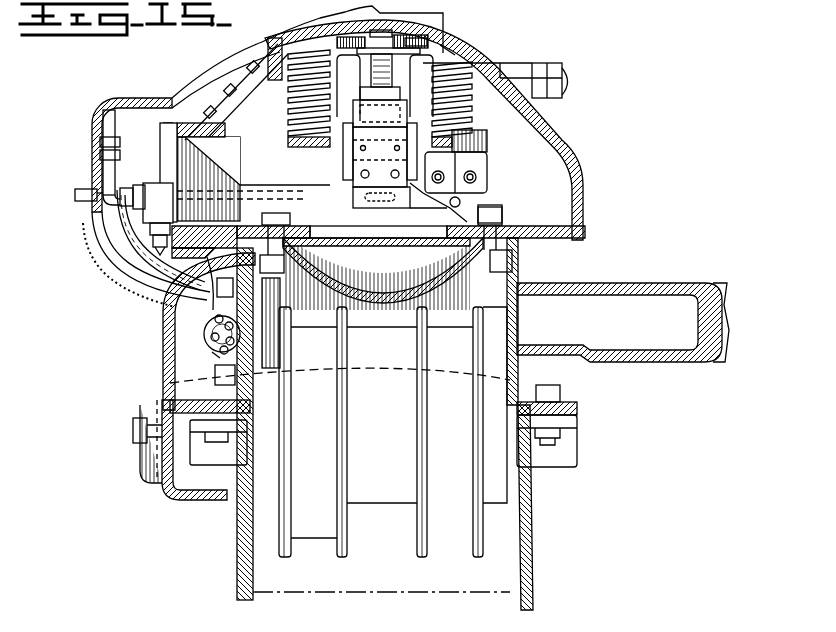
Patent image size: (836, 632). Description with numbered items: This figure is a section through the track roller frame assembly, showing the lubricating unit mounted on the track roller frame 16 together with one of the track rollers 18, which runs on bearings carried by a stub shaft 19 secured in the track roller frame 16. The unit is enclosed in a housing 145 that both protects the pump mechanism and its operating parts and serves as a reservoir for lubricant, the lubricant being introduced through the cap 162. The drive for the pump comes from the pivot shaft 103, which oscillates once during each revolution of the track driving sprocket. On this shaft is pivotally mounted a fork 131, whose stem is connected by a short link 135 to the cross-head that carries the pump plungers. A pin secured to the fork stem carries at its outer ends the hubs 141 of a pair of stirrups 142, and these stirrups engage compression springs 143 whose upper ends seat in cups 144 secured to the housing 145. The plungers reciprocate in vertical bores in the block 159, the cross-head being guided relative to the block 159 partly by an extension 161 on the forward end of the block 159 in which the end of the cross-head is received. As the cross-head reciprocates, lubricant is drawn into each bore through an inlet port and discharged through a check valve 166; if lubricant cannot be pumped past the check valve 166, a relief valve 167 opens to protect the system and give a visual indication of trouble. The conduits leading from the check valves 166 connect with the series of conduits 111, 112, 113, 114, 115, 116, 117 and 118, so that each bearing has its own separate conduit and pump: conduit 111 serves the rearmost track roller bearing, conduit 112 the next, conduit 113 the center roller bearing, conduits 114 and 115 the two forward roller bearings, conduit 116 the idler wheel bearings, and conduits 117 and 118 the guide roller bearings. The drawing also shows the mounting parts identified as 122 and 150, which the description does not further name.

The track roller frame 16 is at (153, 404).
The track roller 18 is at (300, 545).
The stub shaft 19 is at (573, 450).
The pivot shaft 103 is at (569, 88).
The conduit 111 is at (235, 316).
The conduit 112 is at (213, 352).
The conduit 113 is at (211, 344).
The conduit 114 is at (215, 326).
The conduit 115 is at (228, 352).
The conduit 116 is at (233, 342).
The conduit 117 is at (110, 218).
The conduit 118 is at (197, 88).
The motor mount 122 is at (170, 497).
The fork 131 is at (450, 40).
The short link 135 is at (477, 127).
The hub 141 is at (385, 73).
The stirrup 142 is at (480, 150).
The compression spring 143 is at (300, 100).
The cup 144 is at (292, 25).
The housing 145 is at (643, 186).
The contact 150 is at (420, 33).
The block 159 is at (200, 170).
The extension 161 is at (373, 173).
The cap 162 is at (247, 80).
The check valve 166 is at (100, 156).
The relief valve 167 is at (140, 272).